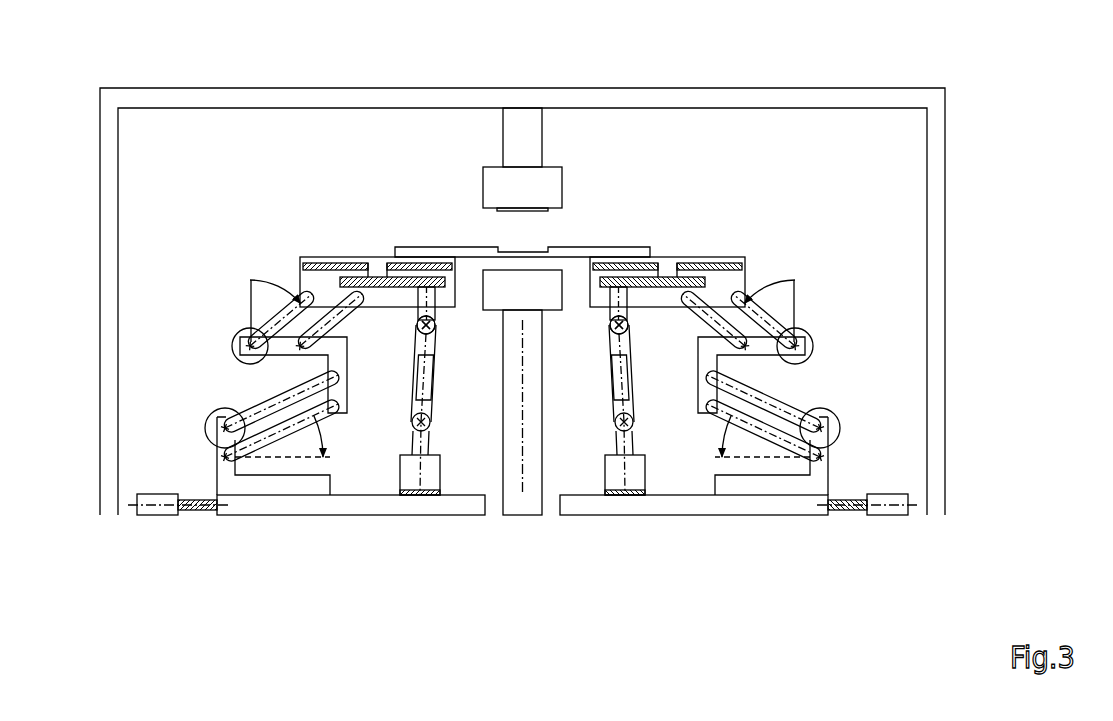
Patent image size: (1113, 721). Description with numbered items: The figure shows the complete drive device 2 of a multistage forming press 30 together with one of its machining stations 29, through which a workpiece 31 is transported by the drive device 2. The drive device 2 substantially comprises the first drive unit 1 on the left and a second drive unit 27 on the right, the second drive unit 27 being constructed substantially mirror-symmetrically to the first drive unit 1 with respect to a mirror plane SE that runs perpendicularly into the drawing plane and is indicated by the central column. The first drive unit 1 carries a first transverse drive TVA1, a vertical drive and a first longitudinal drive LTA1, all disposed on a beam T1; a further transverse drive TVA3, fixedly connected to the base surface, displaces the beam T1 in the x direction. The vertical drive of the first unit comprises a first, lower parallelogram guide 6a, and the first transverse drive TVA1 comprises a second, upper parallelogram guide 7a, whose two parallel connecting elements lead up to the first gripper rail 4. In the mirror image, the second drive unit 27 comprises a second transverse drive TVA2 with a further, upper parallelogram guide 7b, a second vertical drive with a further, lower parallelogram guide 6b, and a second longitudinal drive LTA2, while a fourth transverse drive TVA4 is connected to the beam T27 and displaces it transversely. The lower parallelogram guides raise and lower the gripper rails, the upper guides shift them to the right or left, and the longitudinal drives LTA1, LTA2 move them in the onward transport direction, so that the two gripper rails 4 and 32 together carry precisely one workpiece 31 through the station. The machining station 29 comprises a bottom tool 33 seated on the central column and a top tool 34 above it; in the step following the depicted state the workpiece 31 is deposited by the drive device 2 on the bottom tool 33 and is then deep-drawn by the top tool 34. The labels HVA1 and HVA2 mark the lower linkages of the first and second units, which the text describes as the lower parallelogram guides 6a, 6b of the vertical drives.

The first drive unit 1 is at (306, 356).
The drive device 2 is at (741, 362).
The first gripper rail 4 is at (325, 260).
The first, lower parallelogram guide 6a is at (250, 387).
The further, lower parallelogram guide 6b is at (795, 385).
The second, upper parallelogram guide 7a is at (242, 283).
The further, upper parallelogram guide 7b is at (803, 282).
The second drive unit 27 is at (808, 218).
The machining station 29 is at (782, 76).
The multistage forming press 30 is at (866, 70).
The workpiece 31 is at (625, 252).
The second gripper rail 32 is at (710, 260).
The bottom tool 33 is at (550, 298).
The top tool 34 is at (552, 188).
The mirror plane SE is at (523, 457).
The beam T1 is at (278, 507).
The beam T27 is at (765, 507).
The first transverse drive TVA1 is at (266, 274).
The second transverse drive TVA2 is at (780, 273).
The further transverse drive TVA3 is at (172, 488).
The fourth transverse drive TVA4 is at (872, 488).
The first lower parallel-rod linkage HVA1 is at (246, 399).
The second lower parallel-rod linkage HVA2 is at (800, 400).
The first longitudinal drive LTA1 is at (388, 438).
The second longitudinal drive LTA2 is at (657, 438).